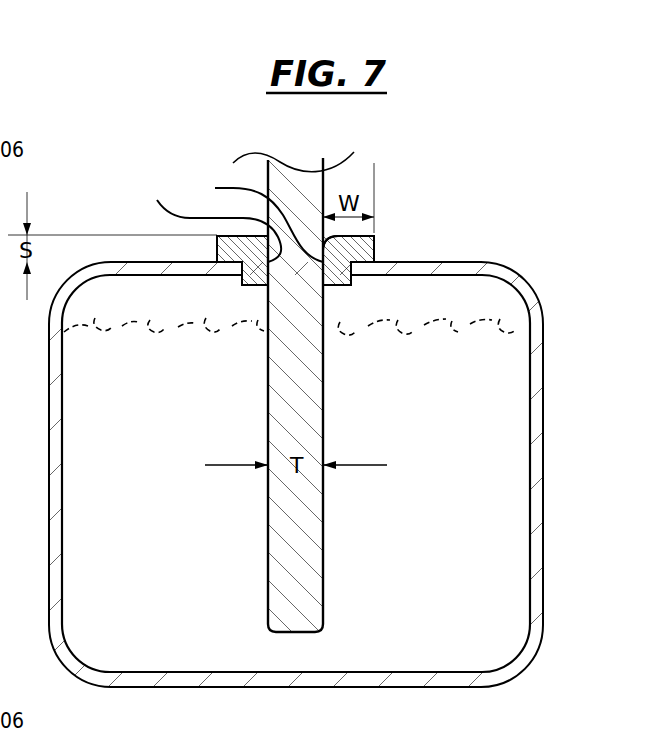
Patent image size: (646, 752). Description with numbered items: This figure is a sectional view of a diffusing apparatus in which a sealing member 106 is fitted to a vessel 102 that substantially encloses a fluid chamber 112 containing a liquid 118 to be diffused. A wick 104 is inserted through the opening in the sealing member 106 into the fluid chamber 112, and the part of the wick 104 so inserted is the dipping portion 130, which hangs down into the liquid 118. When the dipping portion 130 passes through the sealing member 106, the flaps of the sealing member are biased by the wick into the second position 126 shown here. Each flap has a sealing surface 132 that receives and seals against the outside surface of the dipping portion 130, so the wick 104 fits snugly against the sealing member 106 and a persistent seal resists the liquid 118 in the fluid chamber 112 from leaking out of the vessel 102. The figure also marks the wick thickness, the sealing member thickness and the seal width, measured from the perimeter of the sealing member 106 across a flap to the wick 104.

The vessel 102 is at (526, 274).
The wick 104 is at (283, 297).
The sealing member 106 is at (382, 232).
The fluid chamber 112 is at (465, 297).
The liquid 118 is at (487, 373).
The second position 126 is at (347, 250).
The dipping portion 130 is at (287, 398).
The sealing surface 132 is at (215, 188).